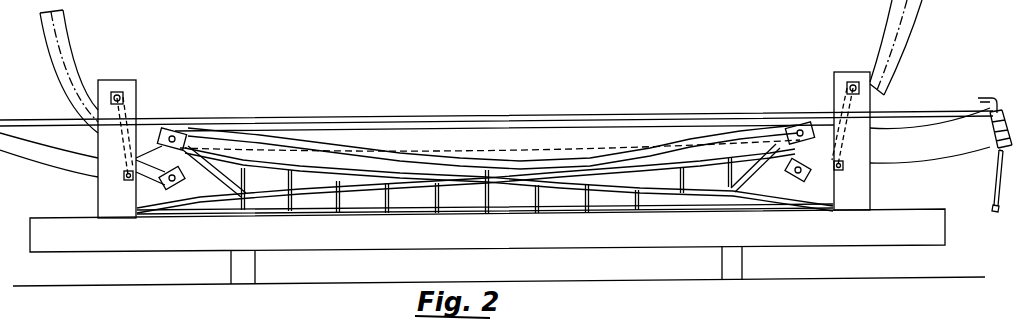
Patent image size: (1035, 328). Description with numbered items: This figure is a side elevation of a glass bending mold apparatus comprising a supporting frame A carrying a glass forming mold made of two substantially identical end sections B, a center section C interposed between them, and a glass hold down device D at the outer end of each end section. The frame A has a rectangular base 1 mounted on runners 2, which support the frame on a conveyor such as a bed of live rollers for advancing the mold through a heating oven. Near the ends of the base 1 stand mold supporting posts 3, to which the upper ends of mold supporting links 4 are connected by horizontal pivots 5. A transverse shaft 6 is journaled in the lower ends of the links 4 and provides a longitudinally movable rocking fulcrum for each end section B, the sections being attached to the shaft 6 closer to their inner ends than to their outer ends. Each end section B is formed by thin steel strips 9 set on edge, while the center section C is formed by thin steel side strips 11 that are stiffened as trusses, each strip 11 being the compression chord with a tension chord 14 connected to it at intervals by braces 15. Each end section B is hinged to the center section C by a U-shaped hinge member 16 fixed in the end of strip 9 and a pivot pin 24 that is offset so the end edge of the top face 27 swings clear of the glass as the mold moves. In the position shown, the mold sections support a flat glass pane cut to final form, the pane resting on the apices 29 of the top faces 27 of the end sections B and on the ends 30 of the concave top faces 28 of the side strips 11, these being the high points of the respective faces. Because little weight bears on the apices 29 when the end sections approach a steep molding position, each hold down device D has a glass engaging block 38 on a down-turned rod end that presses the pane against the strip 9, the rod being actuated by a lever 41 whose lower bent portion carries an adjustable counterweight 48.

The rectangular base 1 is at (142, 245).
The runners 2 is at (231, 272).
The mold supporting posts 3 is at (136, 110).
The mold supporting links 4 is at (130, 100).
The horizontal pivots 5 is at (117, 93).
The transverse shaft 6 is at (124, 178).
The steel strips 9 is at (72, 170).
The side strips 11 is at (647, 158).
The tension chord 14 is at (262, 216).
The braces 15 is at (393, 200).
The hinge member 16 is at (167, 130).
The pivot pin 24 is at (188, 133).
The top faces of the end section strips 27 is at (25, 136).
The top faces of the side strips 28 is at (380, 160).
The apices 29 is at (990, 118).
The ends of the top faces 30 is at (180, 125).
The glass engaging block 38 is at (978, 100).
The lever 41 is at (992, 190).
The counterweight 48 is at (992, 212).
The supporting frame A is at (377, 253).
The end sections B is at (37, 170).
The center section C is at (563, 158).
The glass hold down device D is at (1009, 104).